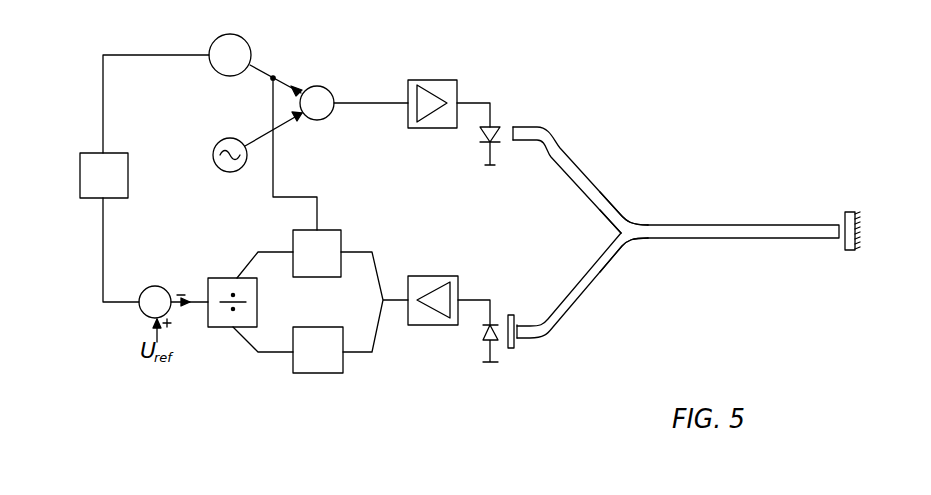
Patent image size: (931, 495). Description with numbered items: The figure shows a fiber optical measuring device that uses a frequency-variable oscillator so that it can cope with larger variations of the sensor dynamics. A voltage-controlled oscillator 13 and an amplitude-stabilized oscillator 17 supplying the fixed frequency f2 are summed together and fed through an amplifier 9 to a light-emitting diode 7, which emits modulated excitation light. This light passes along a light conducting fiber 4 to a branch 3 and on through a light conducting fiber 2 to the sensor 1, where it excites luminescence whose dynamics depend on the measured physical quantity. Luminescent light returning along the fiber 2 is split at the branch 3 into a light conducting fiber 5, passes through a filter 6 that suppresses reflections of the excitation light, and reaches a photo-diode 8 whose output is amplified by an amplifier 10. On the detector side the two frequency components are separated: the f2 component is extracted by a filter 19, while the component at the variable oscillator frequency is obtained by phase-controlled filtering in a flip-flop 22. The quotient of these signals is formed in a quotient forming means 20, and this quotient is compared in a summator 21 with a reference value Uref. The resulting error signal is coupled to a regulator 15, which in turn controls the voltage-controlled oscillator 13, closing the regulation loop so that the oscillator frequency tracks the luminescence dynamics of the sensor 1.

The sensor 1 is at (845, 253).
The light conducting fiber 2 is at (723, 223).
The branch 3 is at (628, 220).
The light conducting fiber 4 is at (578, 164).
The light conducting fiber 5 is at (598, 275).
The filter 6 is at (326, 86).
The light-emitting diode 7 is at (485, 143).
The photo-diode 8 is at (485, 342).
The amplifier 9 is at (458, 82).
The amplifier 10 is at (445, 275).
The voltage-controlled oscillator 13 is at (222, 77).
The regulator 15 is at (128, 198).
The oscillator 17 is at (228, 172).
The filter 19 is at (327, 325).
The quotient forming means 20 is at (218, 277).
The summator 21 is at (150, 285).
The flip-flop 22 is at (335, 228).